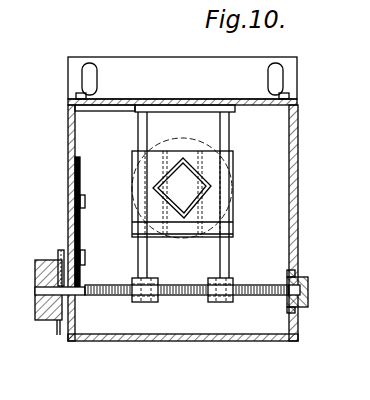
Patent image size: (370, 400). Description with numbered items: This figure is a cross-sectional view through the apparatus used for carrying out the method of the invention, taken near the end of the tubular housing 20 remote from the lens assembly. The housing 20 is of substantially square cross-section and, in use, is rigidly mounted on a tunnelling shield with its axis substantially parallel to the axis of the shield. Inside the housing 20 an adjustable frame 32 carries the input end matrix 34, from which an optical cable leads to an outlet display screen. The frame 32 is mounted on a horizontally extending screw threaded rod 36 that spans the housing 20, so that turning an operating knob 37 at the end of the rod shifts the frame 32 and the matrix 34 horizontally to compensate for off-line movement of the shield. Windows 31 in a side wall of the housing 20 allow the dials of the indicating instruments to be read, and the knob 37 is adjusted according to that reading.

The tubular housing 20 is at (298, 212).
The windows 31 is at (66, 258).
The adjustable frame 32 is at (140, 130).
The input end matrix 34 is at (188, 187).
The screw threaded rod 36 is at (115, 295).
The operating knob 37 is at (44, 320).